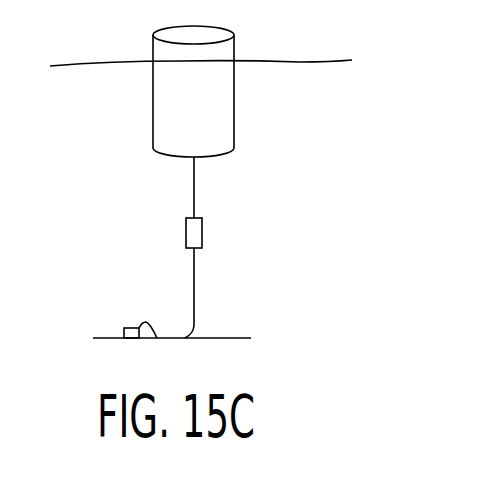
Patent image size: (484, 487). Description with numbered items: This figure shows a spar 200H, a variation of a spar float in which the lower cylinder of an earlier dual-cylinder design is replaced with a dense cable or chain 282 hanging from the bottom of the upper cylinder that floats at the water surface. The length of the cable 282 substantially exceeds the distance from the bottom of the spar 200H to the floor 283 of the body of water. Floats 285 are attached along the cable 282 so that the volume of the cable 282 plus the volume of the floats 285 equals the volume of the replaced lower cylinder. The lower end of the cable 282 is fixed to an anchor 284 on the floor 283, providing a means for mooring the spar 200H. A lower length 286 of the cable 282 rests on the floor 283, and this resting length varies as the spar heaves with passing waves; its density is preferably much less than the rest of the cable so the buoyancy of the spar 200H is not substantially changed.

The spar 200H is at (220, 111).
The cable or chain 282 is at (196, 193).
The floats 285 is at (203, 240).
The floor 283 is at (233, 336).
The anchor 284 is at (123, 333).
The lower length of the cable 286 is at (175, 335).